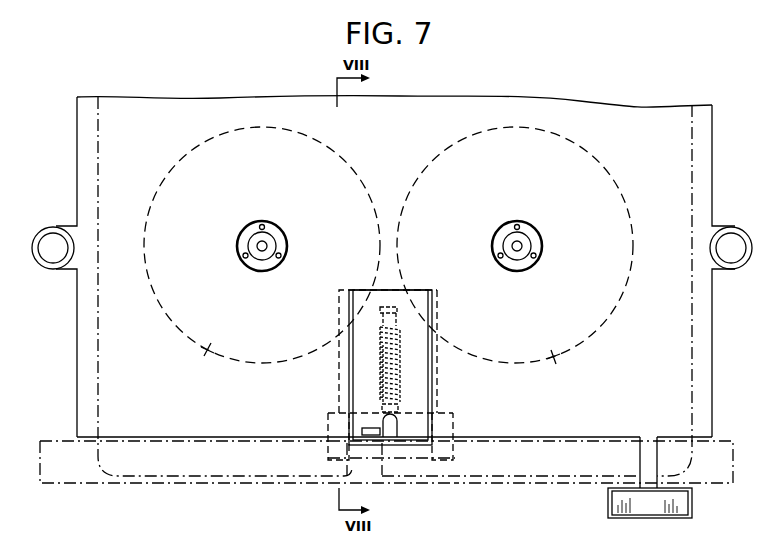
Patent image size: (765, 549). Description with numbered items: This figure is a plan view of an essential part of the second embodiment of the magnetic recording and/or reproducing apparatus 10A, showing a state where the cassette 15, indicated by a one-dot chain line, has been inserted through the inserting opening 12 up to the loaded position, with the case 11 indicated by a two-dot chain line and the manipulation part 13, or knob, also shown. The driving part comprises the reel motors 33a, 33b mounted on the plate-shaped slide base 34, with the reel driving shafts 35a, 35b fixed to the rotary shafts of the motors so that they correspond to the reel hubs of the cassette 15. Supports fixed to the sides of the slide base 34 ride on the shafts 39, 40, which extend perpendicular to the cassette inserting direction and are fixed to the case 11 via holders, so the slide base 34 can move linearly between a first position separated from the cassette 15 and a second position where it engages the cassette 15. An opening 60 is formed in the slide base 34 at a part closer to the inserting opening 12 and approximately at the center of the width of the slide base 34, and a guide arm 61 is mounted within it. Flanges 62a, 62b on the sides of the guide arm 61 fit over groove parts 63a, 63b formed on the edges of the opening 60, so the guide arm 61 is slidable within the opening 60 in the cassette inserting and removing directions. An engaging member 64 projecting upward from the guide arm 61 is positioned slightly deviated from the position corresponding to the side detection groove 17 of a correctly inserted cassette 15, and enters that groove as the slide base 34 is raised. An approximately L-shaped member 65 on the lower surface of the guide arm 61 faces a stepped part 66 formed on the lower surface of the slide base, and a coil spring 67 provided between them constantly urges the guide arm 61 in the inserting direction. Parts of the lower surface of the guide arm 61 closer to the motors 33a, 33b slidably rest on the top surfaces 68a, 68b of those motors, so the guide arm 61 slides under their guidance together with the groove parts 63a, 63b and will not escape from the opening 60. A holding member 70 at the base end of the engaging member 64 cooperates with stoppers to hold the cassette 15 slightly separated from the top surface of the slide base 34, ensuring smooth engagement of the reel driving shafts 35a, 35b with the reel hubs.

The apparatus 10A is at (152, 83).
The case 11 is at (207, 484).
The inserting opening 12 is at (511, 482).
The manipulation part 13 is at (673, 513).
The cassette 15 is at (693, 393).
The side detection groove 17 is at (336, 481).
The reel motor 33a is at (637, 283).
The reel motor 33b is at (141, 278).
The slide base 34 is at (79, 325).
The reel driving shaft 35a is at (524, 236).
The reel driving shaft 35b is at (248, 238).
The shaft 39 is at (732, 240).
The shaft 40 is at (53, 240).
The opening 60 is at (428, 413).
The guide arm 61 is at (366, 372).
The flange 62a is at (399, 356).
The flange 62b is at (372, 369).
The groove part 63a is at (452, 405).
The groove part 63b is at (338, 399).
The engaging member 64 is at (368, 436).
The L-shaped member 65 is at (398, 314).
The stepped part 66 is at (398, 408).
The coil spring 67 is at (401, 358).
The top surface 68a is at (558, 364).
The top surface 68b is at (212, 356).
The holding member 70 is at (396, 430).